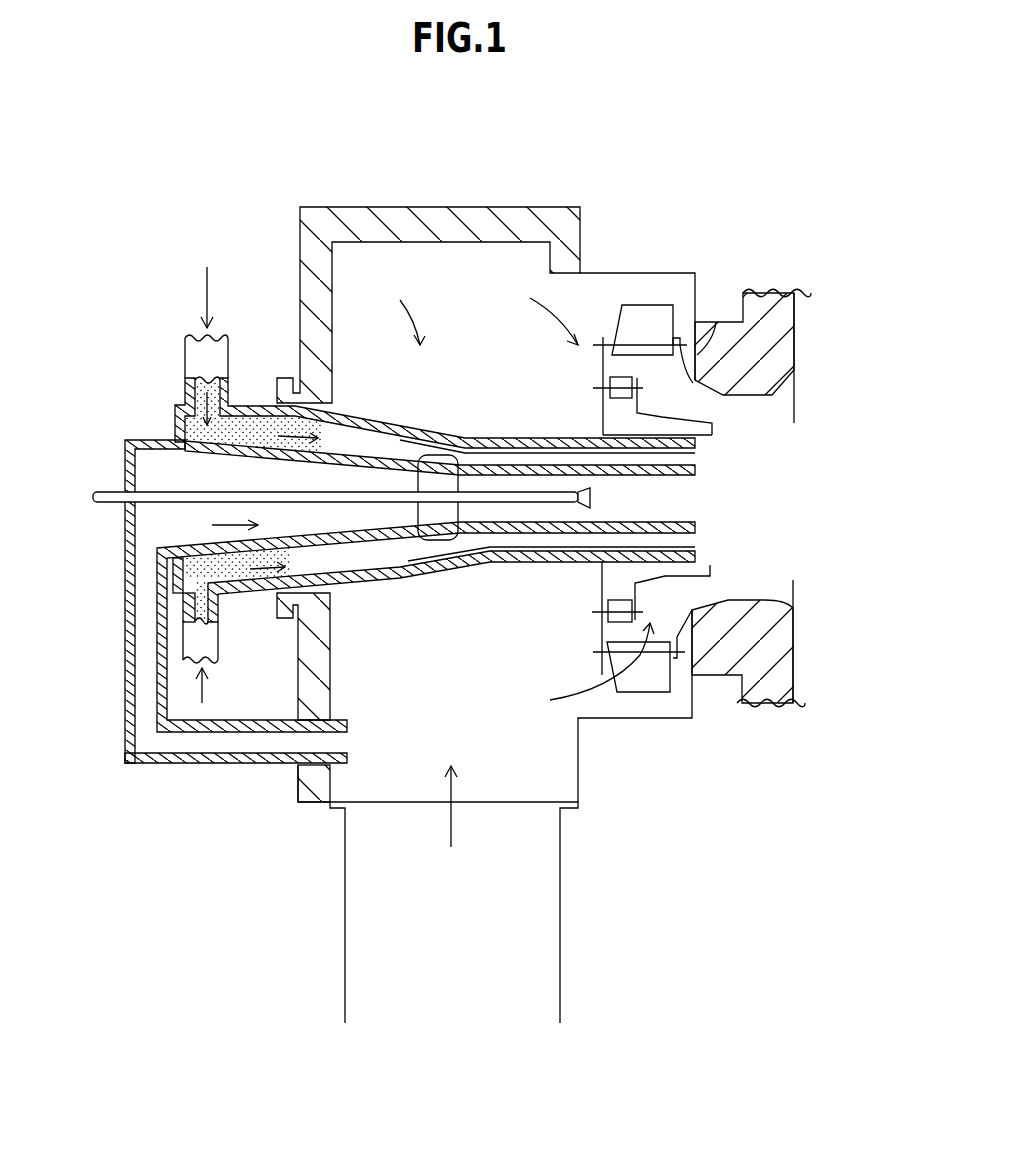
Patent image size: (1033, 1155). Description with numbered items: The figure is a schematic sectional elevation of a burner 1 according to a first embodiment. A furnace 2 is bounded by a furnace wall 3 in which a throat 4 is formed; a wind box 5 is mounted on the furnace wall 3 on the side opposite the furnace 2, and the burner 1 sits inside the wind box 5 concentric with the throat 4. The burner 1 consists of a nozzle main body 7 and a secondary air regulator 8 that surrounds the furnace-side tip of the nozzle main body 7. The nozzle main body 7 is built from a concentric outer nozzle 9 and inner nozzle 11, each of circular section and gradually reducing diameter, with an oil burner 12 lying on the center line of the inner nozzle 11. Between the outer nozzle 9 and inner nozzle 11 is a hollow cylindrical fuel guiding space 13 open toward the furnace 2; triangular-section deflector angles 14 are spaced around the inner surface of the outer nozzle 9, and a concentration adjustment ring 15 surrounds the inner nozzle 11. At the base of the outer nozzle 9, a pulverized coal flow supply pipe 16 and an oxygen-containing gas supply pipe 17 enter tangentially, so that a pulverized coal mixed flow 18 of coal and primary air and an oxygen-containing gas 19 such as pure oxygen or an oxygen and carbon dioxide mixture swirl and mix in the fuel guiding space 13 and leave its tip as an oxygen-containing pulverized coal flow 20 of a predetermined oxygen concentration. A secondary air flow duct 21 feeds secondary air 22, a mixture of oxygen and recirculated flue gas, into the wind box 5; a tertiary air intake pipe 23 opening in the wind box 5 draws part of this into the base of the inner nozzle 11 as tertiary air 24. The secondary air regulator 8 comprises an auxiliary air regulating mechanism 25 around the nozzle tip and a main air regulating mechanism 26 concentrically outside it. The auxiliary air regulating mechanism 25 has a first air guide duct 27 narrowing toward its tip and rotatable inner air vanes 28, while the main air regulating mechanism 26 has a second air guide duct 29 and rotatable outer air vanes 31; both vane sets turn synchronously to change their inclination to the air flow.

The burner 1 is at (455, 292).
The furnace 2 is at (830, 352).
The furnace wall 3 is at (797, 315).
The throat 4 is at (757, 422).
The wind box 5 is at (452, 207).
The nozzle main body 7 is at (402, 313).
The secondary air regulator 8 is at (543, 313).
The outer nozzle 9 is at (462, 430).
The inner nozzle 11 is at (350, 447).
The oil burner 12 is at (125, 470).
The fuel guiding space 13 is at (360, 555).
The deflector angles 14 is at (687, 455).
The concentration adjustment ring 15 is at (438, 540).
The pulverized coal flow supply pipe 16 is at (183, 350).
The oxygen-containing gas supply pipe 17 is at (222, 642).
The pulverized coal mixed flow 18 is at (205, 285).
The oxygen-containing gas 19 is at (205, 690).
The oxygen-containing pulverized coal flow 20 is at (280, 437).
The secondary air flow duct 21 is at (345, 938).
The secondary air 22 is at (453, 832).
The tertiary air intake pipe 23 is at (198, 765).
The tertiary air 24 is at (230, 538).
The auxiliary air regulating mechanism 25 is at (620, 623).
The main air regulating mechanism 26 is at (600, 662).
The first air guide duct 27 is at (662, 417).
The inner air vanes 28 is at (628, 305).
The second air guide duct 29 is at (716, 322).
The outer air vanes 31 is at (640, 305).